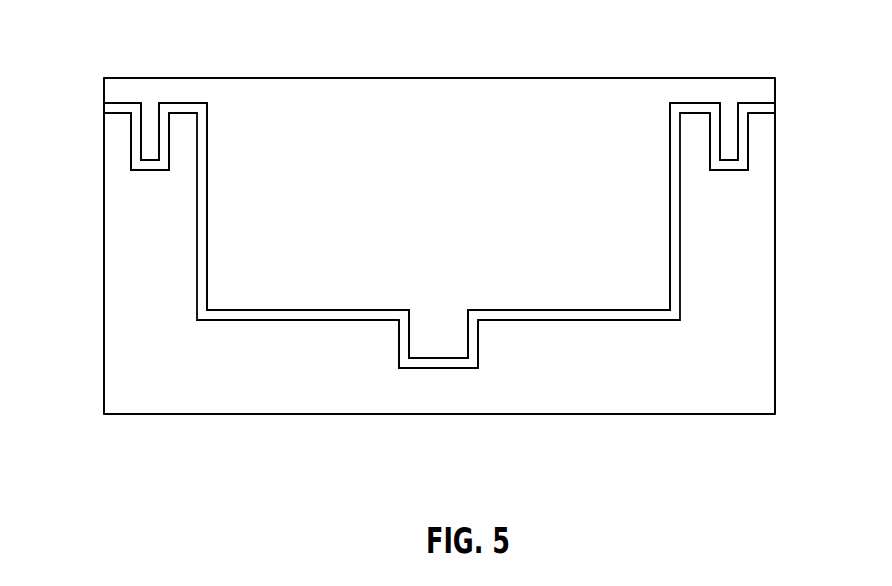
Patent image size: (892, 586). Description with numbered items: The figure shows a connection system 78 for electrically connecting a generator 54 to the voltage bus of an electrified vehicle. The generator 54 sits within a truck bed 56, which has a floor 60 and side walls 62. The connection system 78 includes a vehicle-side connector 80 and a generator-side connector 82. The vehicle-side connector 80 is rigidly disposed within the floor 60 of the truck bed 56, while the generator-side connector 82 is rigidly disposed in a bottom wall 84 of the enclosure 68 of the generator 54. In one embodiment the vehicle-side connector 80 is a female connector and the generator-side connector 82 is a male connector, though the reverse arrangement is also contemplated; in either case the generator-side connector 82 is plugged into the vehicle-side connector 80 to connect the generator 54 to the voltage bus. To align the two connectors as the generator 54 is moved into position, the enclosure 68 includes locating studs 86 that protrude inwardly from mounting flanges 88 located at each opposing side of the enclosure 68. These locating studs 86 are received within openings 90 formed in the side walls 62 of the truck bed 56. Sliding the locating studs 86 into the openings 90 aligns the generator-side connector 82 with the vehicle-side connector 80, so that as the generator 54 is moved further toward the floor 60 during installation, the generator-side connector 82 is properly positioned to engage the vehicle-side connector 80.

The generator 54 is at (572, 77).
The truck bed 56 is at (779, 245).
The floor 60 is at (297, 320).
The side walls 62 is at (128, 297).
The enclosure 68 is at (652, 77).
The connection system 78 is at (489, 348).
The vehicle-side connector 80 is at (438, 373).
The generator-side connector 82 is at (433, 331).
The bottom wall 84 is at (607, 310).
The locating studs 86 is at (147, 133).
The mounting flanges 88 is at (152, 90).
The openings 90 is at (167, 172).